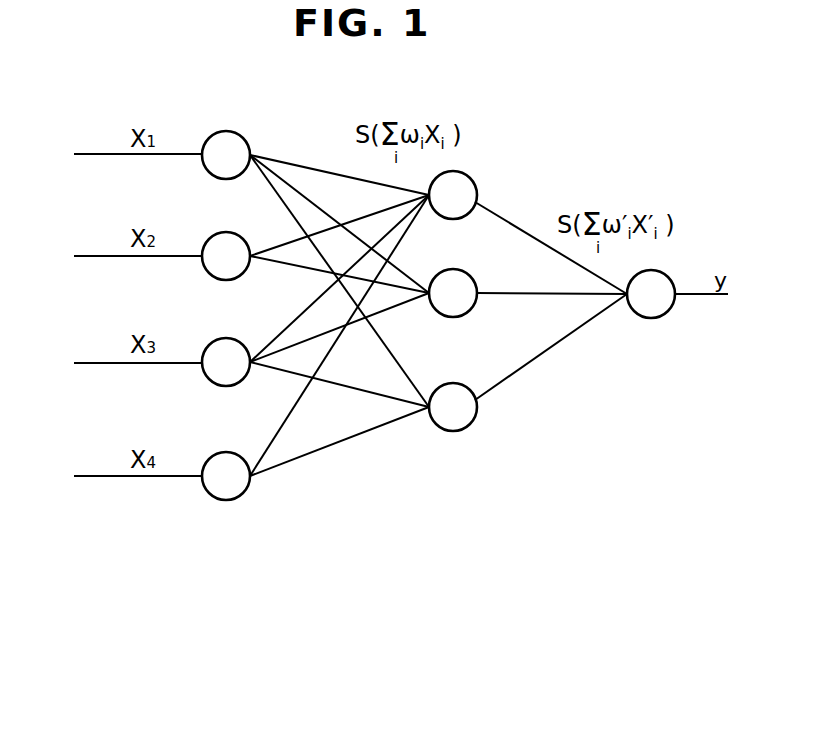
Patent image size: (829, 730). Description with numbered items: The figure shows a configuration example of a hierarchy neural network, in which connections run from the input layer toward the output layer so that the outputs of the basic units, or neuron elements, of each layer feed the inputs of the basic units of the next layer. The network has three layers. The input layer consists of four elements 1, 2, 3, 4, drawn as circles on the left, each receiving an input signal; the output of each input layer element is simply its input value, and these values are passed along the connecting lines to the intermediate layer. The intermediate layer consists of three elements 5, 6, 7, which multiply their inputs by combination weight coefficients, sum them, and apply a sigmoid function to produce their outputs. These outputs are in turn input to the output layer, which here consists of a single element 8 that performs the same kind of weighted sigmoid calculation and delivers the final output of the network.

The input layer element 1 is at (236, 133).
The input layer element 2 is at (227, 232).
The input layer element 3 is at (230, 338).
The input layer element 4 is at (229, 452).
The intermediate layer element 5 is at (472, 180).
The intermediate layer element 6 is at (470, 276).
The intermediate layer element 7 is at (466, 387).
The output layer element 8 is at (670, 278).